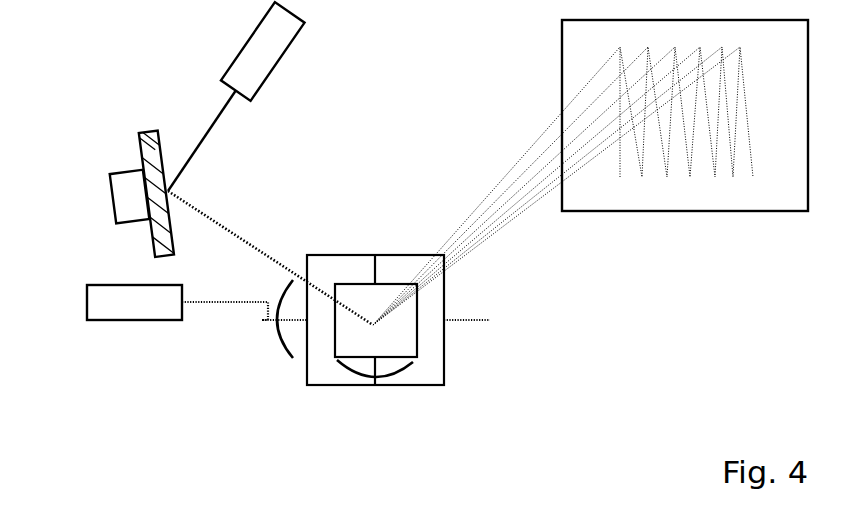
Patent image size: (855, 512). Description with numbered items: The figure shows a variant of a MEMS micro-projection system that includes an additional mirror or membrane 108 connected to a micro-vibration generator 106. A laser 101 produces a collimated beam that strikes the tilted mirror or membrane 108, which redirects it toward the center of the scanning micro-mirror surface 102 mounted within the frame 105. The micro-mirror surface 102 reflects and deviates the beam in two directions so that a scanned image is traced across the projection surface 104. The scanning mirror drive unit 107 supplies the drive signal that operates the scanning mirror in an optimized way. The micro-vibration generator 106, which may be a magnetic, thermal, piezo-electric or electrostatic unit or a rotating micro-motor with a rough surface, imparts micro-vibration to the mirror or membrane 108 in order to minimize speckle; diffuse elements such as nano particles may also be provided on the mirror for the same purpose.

The laser 101 is at (247, 53).
The micro-mirror surface 102 is at (398, 337).
The projection surface 104 is at (732, 212).
The frame 105 is at (323, 385).
The micro-vibration generator 106 is at (115, 187).
The scanning mirror drive unit 107 is at (93, 302).
The mirror or membrane 108 is at (147, 128).